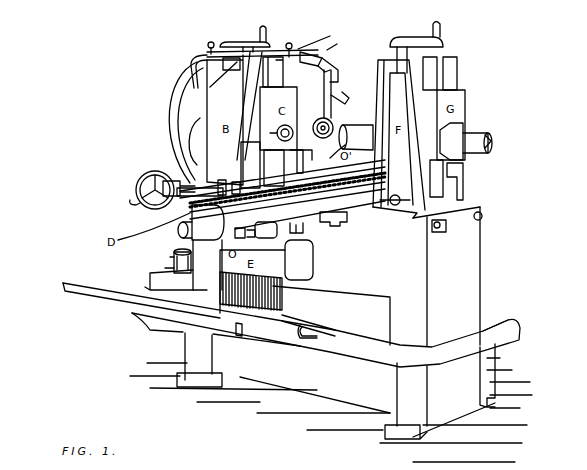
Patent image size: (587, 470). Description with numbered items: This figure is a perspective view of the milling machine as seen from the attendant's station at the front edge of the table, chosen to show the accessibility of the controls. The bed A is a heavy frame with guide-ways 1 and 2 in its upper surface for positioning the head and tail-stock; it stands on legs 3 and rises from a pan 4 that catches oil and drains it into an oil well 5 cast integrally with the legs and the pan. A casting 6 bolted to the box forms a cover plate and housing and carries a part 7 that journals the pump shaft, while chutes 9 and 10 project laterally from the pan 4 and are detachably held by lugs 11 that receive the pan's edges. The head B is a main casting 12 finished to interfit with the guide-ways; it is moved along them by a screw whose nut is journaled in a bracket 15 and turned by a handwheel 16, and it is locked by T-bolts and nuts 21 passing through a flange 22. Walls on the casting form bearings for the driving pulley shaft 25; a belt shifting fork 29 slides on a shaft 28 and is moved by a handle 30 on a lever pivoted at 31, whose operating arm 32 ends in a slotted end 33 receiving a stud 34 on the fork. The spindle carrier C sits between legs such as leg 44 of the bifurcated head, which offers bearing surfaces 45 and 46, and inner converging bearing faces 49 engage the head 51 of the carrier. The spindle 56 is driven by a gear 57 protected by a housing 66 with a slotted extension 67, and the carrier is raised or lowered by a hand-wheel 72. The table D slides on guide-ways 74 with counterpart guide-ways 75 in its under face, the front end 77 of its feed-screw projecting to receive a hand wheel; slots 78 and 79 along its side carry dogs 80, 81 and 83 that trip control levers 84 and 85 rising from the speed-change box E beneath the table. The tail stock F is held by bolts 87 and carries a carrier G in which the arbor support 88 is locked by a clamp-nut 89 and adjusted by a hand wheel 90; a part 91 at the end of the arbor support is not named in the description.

The guide-way 1 is at (443, 228).
The guide-way 2 is at (482, 216).
The legs 3 is at (297, 334).
The pan 4 is at (495, 320).
The oil well 5 is at (151, 283).
The casting 6 is at (165, 268).
The part 7 is at (168, 258).
The chute 9 is at (191, 260).
The chute 10 is at (127, 298).
The lugs 11 is at (240, 336).
The main casting 12 is at (192, 79).
The bracket 15 is at (197, 239).
The handwheel 16 is at (157, 170).
The T-bolts and nuts 21 is at (221, 179).
The flange 22 is at (234, 180).
The driving pulley shaft 25 is at (322, 136).
The shaft 28 is at (331, 84).
The belt shifting fork 29 is at (346, 99).
The handle 30 is at (204, 42).
The pivot 31 is at (287, 44).
The operating arm 32 is at (312, 56).
The slotted end 33 is at (327, 72).
The stud 34 is at (332, 66).
The leg 44 is at (273, 72).
The bearing surface 45 is at (314, 39).
The bearing surface 46 is at (338, 41).
The bearing faces 49 is at (301, 158).
The head 51 is at (291, 100).
The spindle 56 is at (293, 128).
The gear 57 is at (207, 107).
The housing 66 is at (170, 113).
The extension 67 is at (204, 55).
The hand-wheel 72 is at (258, 40).
The guide-ways 74 is at (251, 239).
The counterpart guide-ways 75 is at (250, 165).
The front end of feed screw 77 is at (178, 231).
The slot 78 is at (234, 238).
The slot 79 is at (283, 168).
The dog 80 is at (329, 156).
The dog 81 is at (333, 221).
The dog 83 is at (266, 230).
The control lever 84 is at (304, 231).
The control lever 85 is at (299, 260).
The bolts 87 is at (399, 139).
The arbor support 88 is at (360, 124).
The clamp-nut 89 is at (463, 126).
The hand wheel 90 is at (416, 48).
The spindle 91 is at (492, 141).